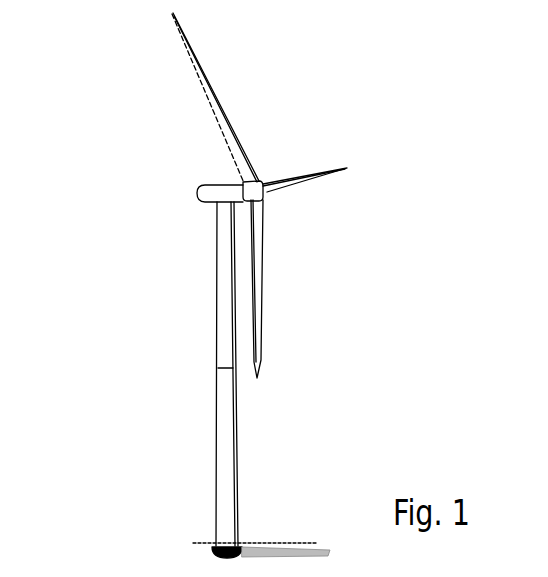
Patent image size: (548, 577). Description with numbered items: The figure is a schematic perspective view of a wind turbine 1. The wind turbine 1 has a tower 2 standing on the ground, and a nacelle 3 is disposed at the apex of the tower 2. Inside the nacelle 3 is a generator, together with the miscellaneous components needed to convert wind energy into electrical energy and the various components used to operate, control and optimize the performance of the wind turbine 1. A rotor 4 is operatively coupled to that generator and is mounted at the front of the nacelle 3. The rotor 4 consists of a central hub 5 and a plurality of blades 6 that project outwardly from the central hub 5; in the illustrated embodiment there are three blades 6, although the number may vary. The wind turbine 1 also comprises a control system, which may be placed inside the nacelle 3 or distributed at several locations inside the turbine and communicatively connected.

The wind turbine 1 is at (211, 285).
The tower 2 is at (222, 318).
The nacelle 3 is at (209, 184).
The rotor 4 is at (279, 195).
The central hub 5 is at (259, 182).
The blades 6 is at (220, 106).